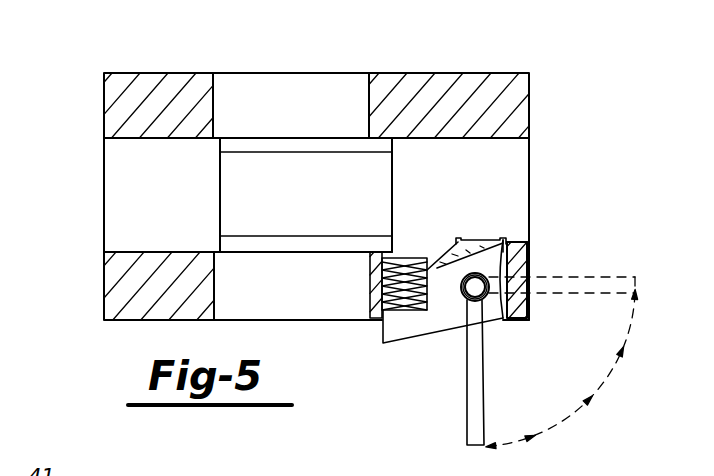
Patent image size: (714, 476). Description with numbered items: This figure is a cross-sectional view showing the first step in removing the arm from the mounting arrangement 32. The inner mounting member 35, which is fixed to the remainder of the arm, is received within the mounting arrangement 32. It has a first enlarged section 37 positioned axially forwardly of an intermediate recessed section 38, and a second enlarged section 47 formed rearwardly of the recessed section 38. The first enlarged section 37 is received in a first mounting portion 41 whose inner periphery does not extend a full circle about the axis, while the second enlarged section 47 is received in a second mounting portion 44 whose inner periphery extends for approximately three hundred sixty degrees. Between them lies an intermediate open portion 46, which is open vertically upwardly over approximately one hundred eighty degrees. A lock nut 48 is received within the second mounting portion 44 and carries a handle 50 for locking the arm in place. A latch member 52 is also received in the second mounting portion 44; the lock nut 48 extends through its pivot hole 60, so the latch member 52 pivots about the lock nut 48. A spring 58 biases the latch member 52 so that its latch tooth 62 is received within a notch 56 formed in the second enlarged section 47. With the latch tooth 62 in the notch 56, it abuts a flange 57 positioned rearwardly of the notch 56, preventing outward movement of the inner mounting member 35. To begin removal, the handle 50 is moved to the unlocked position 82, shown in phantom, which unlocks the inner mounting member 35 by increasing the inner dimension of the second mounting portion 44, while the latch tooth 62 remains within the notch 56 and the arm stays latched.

The mounting arrangement 32 is at (115, 297).
The inner mounting member 35 is at (113, 222).
The first enlarged section 37 is at (112, 193).
The intermediate recessed section 38 is at (252, 172).
The first mounting portion 41 is at (110, 98).
The second mounting portion 44 is at (517, 100).
The intermediate open portion 46 is at (337, 82).
The second enlarged section 47 is at (522, 219).
The lock nut 48 is at (484, 304).
The handle 50 is at (470, 428).
The latch member 52 is at (392, 342).
The notch 56 is at (460, 238).
The flange 57 is at (512, 245).
The spring 58 is at (384, 300).
The pivot hole 60 is at (463, 300).
The latch tooth 62 is at (502, 238).
The unlocked position 82 is at (603, 284).